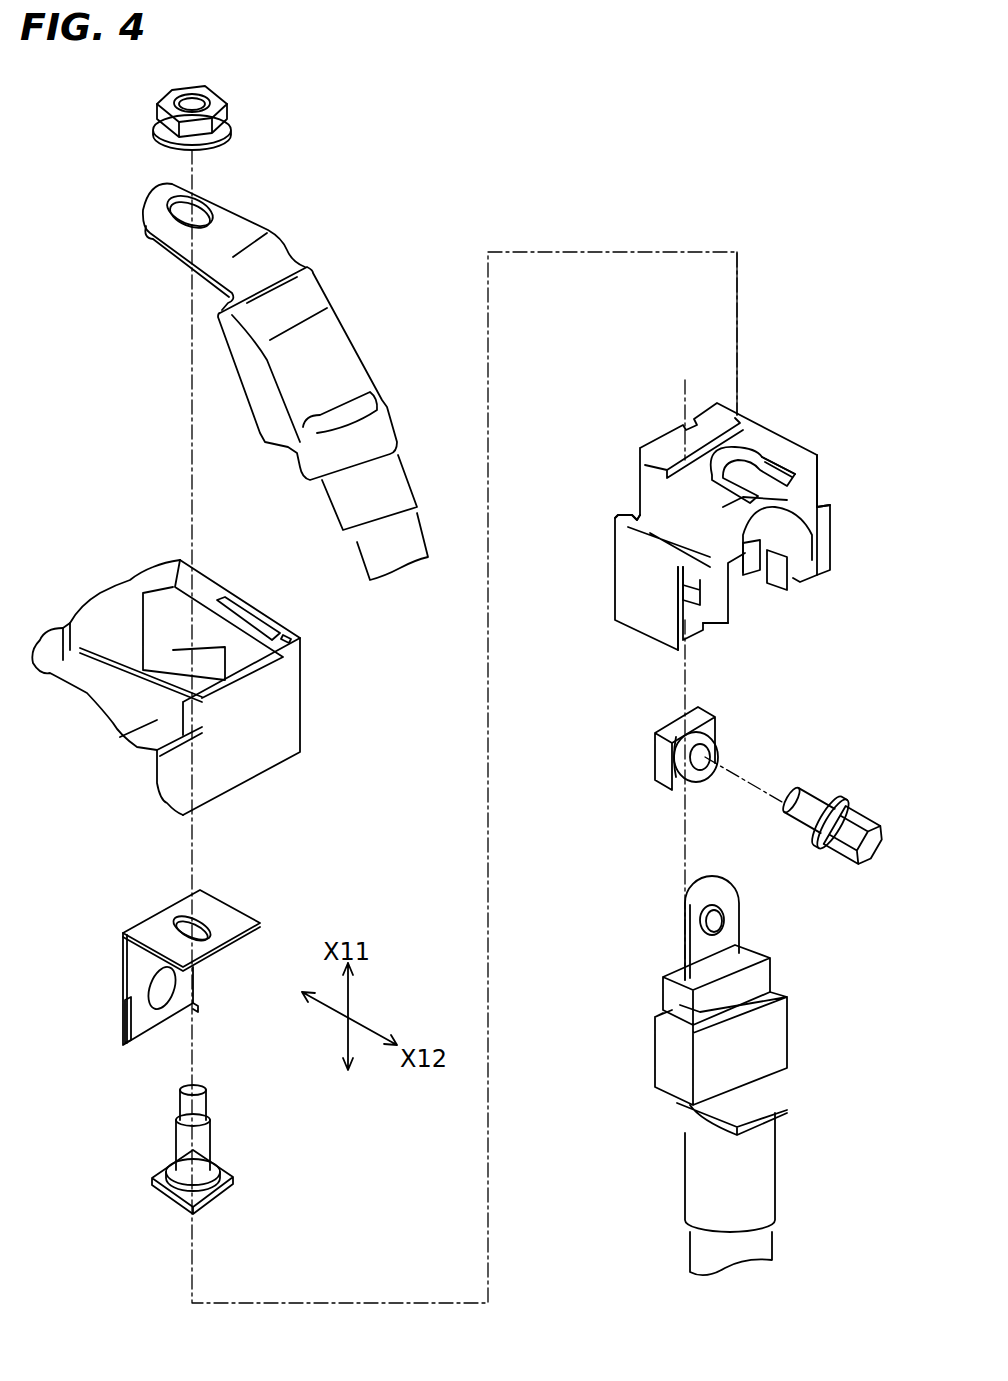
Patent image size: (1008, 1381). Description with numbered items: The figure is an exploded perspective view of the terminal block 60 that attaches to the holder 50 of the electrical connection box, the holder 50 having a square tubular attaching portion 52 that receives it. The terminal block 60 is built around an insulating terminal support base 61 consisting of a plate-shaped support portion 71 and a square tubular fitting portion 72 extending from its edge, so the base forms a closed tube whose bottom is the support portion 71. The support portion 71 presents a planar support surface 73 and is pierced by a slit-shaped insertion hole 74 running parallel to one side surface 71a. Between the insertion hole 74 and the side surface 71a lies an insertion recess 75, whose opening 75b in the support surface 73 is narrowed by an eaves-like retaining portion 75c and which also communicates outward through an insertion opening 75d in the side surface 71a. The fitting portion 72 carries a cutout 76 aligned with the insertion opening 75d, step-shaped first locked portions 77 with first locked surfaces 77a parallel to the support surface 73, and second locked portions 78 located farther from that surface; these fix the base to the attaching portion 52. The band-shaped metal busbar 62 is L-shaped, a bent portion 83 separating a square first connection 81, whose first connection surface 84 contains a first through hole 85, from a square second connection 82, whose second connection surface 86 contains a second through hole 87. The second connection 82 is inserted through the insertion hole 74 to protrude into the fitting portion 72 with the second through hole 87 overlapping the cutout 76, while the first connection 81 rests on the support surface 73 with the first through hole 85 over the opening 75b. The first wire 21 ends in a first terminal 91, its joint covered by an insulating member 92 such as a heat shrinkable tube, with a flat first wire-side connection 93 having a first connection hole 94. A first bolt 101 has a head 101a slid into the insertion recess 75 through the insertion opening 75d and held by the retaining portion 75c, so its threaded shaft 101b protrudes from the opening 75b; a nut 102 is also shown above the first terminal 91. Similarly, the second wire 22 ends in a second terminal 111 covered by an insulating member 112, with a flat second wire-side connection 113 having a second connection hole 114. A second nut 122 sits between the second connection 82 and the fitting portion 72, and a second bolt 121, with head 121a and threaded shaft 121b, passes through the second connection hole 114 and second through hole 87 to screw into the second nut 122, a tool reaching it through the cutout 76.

The first wire 21 is at (417, 553).
The second wire 22 is at (763, 1252).
The holder 50 is at (183, 676).
The attaching portion 52 is at (205, 595).
The terminal block 60 is at (816, 287).
The terminal support base 61 is at (731, 512).
The busbar 62 is at (194, 971).
The support portion 71 is at (703, 403).
The side surface 71a is at (808, 483).
The fitting portion 72 is at (638, 617).
The support surface 73 is at (760, 438).
The insertion hole 74 is at (672, 467).
The insertion recess 75 is at (754, 458).
The opening 75b is at (722, 505).
The retaining portion 75c is at (773, 455).
The insertion opening 75d is at (770, 560).
The cutout 76 is at (738, 623).
The first locked portions 77 is at (633, 537).
The first locked surface 77a is at (683, 550).
The second locked portions 78 is at (675, 580).
The first connection 81 is at (230, 903).
The second connection 82 is at (140, 1043).
The bent portion 83 is at (152, 913).
The first connection surface 84 is at (205, 905).
The first through hole 85 is at (192, 937).
The second connection surface 86 is at (185, 987).
The second through hole 87 is at (157, 1002).
The first terminal 91 is at (226, 236).
The insulating member 92 is at (353, 357).
The first wire-side connection 93 is at (237, 217).
The first connection hole 94 is at (180, 226).
The first bolt 101 is at (182, 1155).
The head 101a is at (175, 1188).
The shaft 101b is at (185, 1148).
The nut 102 is at (226, 103).
The second terminal 111 is at (714, 1005).
The insulating member 112 is at (770, 1168).
The second wire-side connection 113 is at (733, 932).
The second connection hole 114 is at (705, 933).
The second bolt 121 is at (813, 839).
The head 121a is at (863, 817).
The shaft 121b is at (807, 809).
The second nut 122 is at (717, 722).